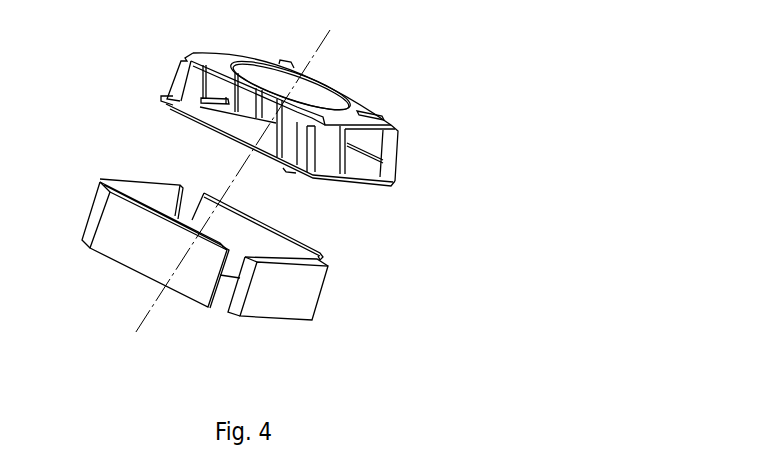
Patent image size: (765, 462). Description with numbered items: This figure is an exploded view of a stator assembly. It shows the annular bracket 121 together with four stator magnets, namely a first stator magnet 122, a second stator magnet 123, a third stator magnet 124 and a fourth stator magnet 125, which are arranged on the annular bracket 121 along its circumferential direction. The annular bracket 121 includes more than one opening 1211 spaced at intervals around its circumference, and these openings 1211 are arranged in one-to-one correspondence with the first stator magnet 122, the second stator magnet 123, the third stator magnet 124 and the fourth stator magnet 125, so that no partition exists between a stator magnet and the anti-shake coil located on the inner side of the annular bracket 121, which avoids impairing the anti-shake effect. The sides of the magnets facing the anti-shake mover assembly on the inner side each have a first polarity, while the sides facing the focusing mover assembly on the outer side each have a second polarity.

The annular bracket 121 is at (358, 112).
The opening 1211 is at (222, 97).
The first stator magnet 122 is at (139, 179).
The second stator magnet 123 is at (130, 247).
The third stator magnet 124 is at (272, 300).
The fourth stator magnet 125 is at (278, 228).